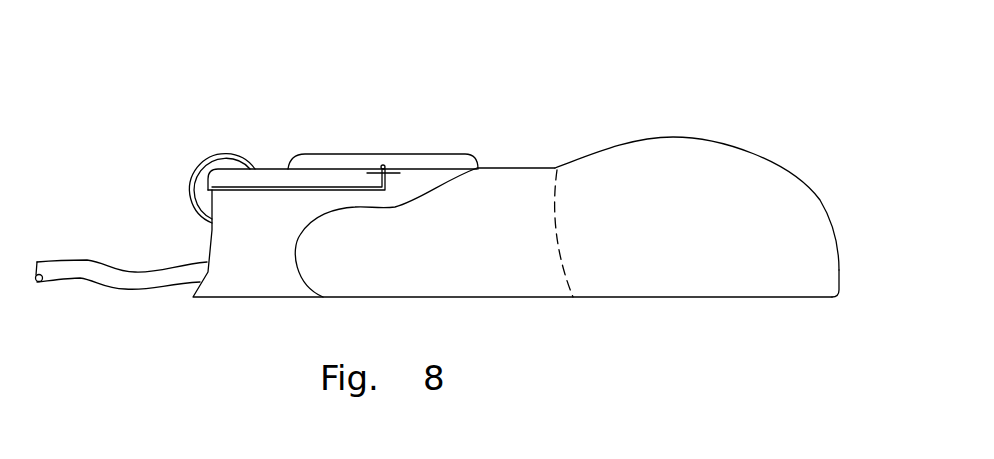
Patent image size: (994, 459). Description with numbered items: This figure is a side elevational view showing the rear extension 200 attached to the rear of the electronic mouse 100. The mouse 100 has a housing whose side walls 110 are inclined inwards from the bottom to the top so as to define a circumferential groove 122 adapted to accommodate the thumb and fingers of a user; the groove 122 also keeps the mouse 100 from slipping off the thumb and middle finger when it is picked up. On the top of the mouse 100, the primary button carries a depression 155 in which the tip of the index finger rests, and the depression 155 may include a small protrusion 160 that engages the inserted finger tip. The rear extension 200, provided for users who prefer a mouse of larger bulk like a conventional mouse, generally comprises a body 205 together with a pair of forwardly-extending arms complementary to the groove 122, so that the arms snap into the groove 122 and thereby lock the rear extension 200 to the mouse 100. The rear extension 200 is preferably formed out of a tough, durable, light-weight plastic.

The electronic mouse 100 is at (177, 337).
The side walls 110 is at (190, 234).
The circumferential groove 122 is at (207, 253).
The depression 155 is at (345, 165).
The protrusion 160 is at (383, 168).
The rear extension 200 is at (670, 108).
The body 205 is at (740, 167).